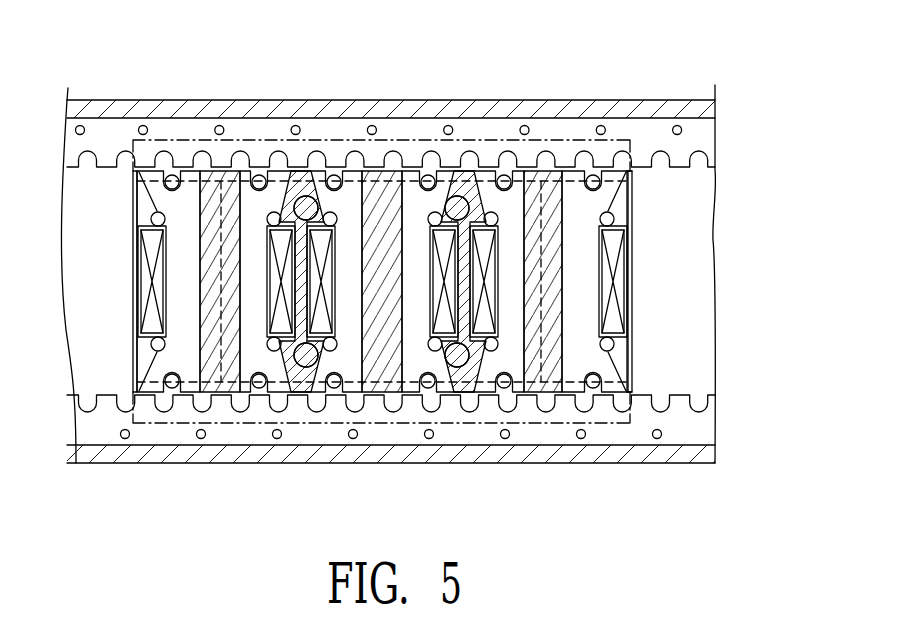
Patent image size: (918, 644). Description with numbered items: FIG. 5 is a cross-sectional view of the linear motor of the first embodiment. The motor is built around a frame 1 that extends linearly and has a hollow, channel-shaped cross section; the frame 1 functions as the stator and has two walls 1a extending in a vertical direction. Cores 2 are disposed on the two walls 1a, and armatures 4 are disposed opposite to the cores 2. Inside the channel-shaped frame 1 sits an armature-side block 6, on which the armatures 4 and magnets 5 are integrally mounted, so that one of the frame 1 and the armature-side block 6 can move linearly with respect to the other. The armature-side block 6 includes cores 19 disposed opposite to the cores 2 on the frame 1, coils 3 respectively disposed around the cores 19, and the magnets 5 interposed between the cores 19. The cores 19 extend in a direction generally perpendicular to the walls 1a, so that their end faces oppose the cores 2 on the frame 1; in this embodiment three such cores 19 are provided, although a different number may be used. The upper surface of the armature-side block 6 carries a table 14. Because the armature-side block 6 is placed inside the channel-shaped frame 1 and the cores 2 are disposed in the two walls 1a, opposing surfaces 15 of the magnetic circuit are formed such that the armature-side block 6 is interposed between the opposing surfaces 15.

The frame 1 is at (682, 113).
The wall 1a is at (113, 112).
The core 2 is at (317, 128).
The coil 3 is at (147, 281).
The armature 4 is at (349, 212).
The magnet 5 is at (226, 392).
The armature-side block 6 is at (620, 208).
The table 14 is at (177, 138).
The opposing surface 15 is at (638, 175).
The core 19 is at (410, 192).